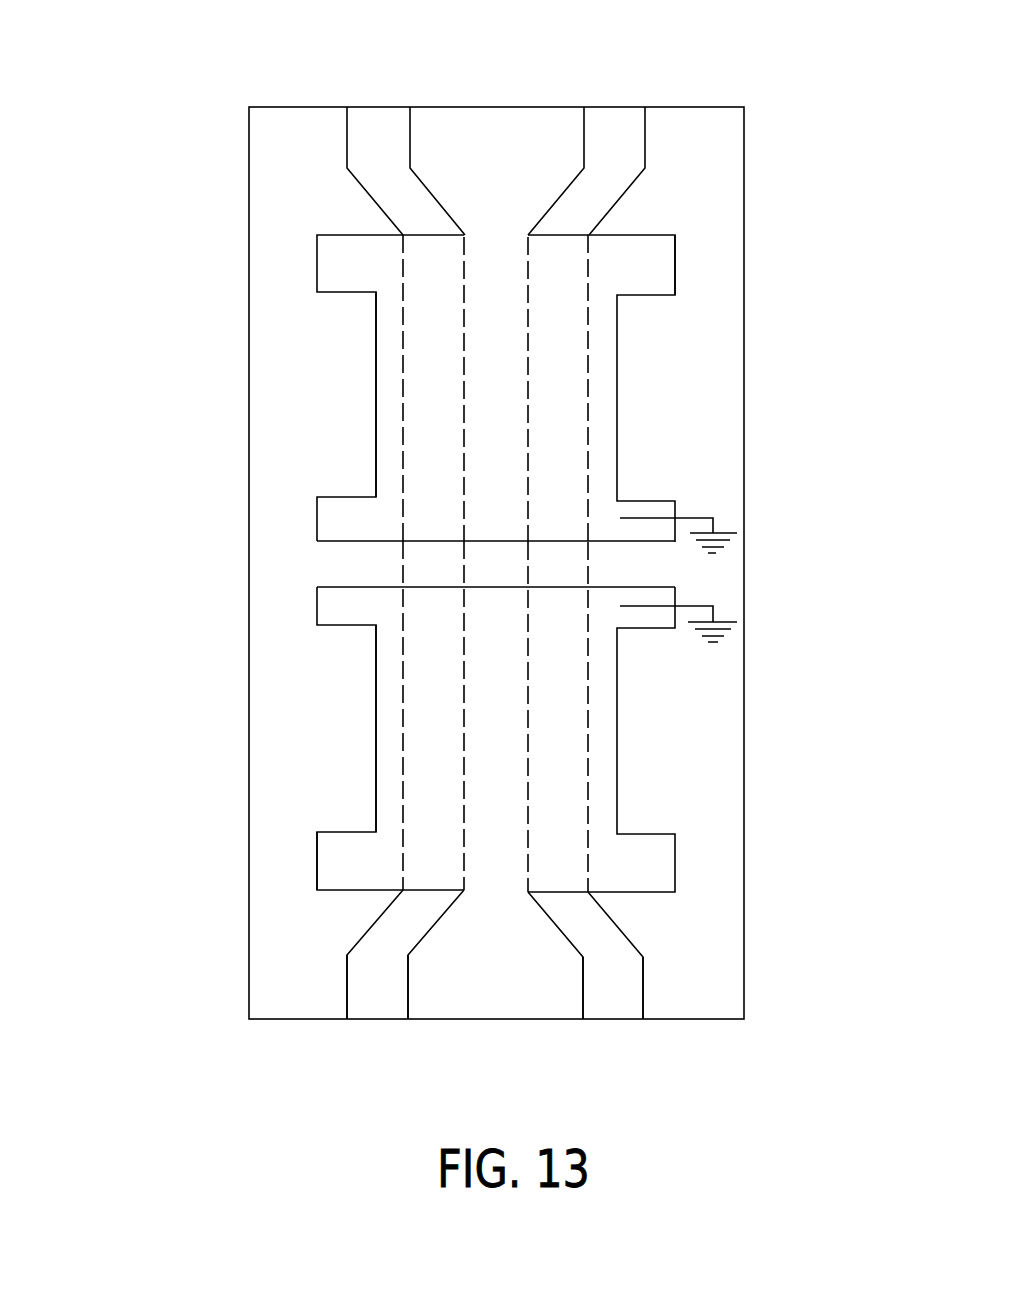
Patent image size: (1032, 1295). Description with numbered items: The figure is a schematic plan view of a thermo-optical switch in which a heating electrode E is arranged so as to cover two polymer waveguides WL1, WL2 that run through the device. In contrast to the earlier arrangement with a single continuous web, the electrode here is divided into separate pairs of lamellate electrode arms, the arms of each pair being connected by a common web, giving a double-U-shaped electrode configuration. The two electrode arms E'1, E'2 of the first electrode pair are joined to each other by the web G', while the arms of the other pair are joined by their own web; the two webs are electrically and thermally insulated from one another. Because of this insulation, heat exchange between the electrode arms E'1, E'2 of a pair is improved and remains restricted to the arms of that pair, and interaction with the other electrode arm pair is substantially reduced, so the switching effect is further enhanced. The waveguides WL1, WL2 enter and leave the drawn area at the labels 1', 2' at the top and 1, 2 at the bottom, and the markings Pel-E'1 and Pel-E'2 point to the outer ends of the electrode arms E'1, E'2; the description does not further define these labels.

The upper terminal of first word line 1' is at (406, 121).
The upper terminal of second word line 2' is at (586, 121).
The lower terminal of first word line 1 is at (405, 1001).
The lower terminal of second word line 2 is at (586, 1002).
The electrode arm E'1 is at (299, 715).
The electrode arm E'2 is at (687, 717).
The heating electrode E is at (277, 562).
The web portion G' is at (722, 660).
The polymer waveguide WL1 is at (383, 933).
The polymer waveguide WL2 is at (610, 940).
The electric polarization of electrode E'1 Pel-E'1 is at (186, 861).
The electric polarization of electrode E'2 Pel-E'2 is at (799, 265).